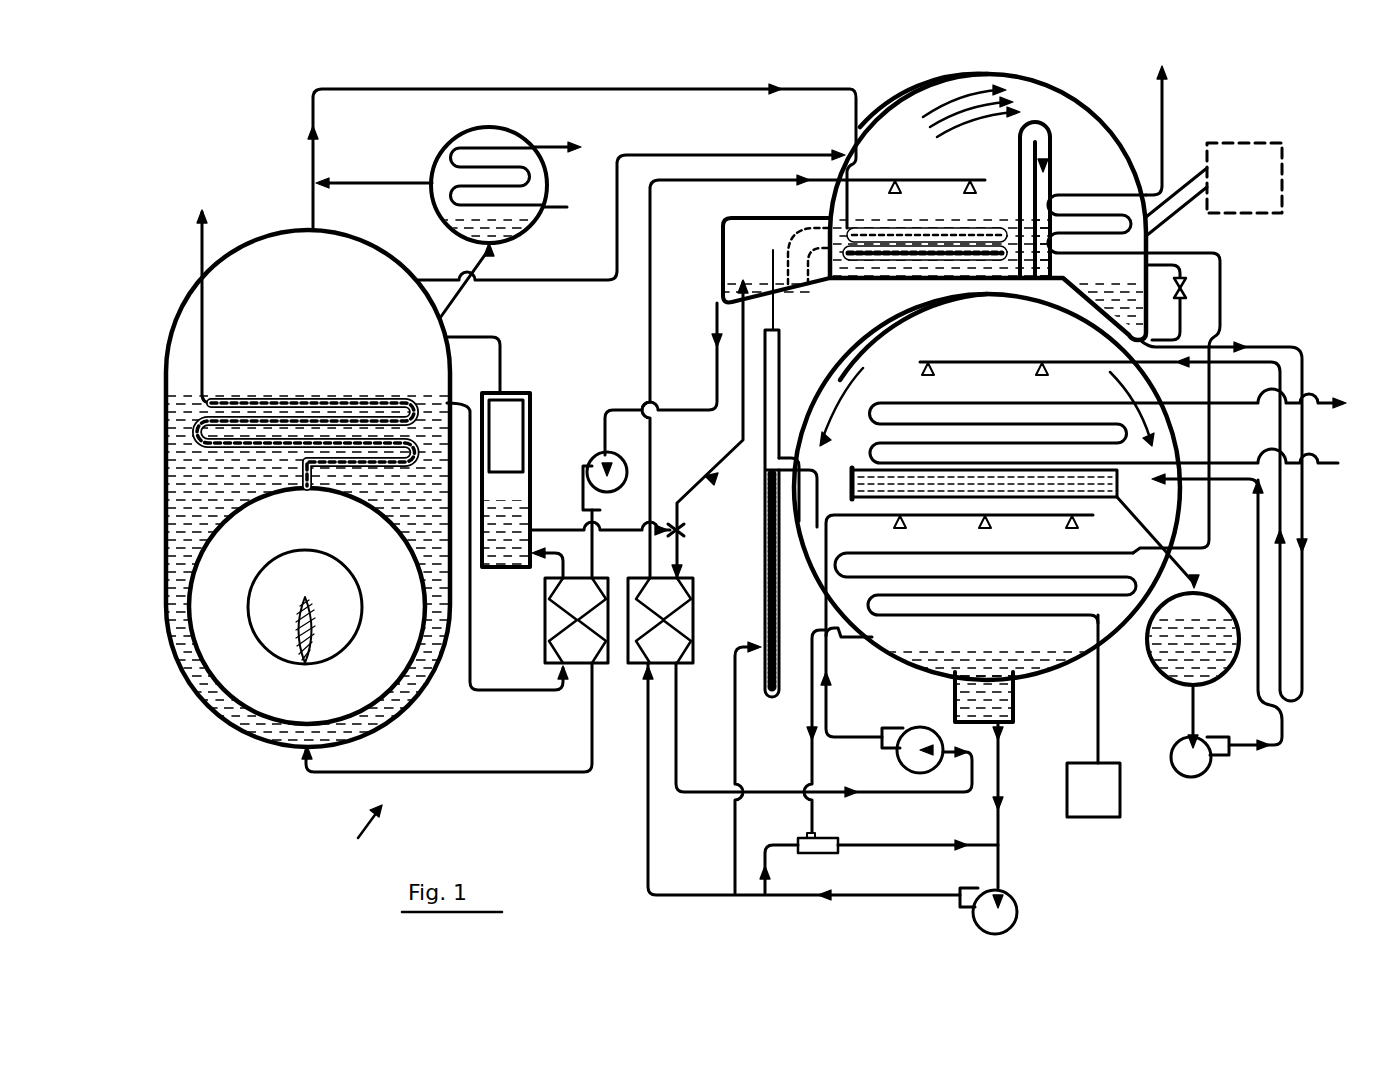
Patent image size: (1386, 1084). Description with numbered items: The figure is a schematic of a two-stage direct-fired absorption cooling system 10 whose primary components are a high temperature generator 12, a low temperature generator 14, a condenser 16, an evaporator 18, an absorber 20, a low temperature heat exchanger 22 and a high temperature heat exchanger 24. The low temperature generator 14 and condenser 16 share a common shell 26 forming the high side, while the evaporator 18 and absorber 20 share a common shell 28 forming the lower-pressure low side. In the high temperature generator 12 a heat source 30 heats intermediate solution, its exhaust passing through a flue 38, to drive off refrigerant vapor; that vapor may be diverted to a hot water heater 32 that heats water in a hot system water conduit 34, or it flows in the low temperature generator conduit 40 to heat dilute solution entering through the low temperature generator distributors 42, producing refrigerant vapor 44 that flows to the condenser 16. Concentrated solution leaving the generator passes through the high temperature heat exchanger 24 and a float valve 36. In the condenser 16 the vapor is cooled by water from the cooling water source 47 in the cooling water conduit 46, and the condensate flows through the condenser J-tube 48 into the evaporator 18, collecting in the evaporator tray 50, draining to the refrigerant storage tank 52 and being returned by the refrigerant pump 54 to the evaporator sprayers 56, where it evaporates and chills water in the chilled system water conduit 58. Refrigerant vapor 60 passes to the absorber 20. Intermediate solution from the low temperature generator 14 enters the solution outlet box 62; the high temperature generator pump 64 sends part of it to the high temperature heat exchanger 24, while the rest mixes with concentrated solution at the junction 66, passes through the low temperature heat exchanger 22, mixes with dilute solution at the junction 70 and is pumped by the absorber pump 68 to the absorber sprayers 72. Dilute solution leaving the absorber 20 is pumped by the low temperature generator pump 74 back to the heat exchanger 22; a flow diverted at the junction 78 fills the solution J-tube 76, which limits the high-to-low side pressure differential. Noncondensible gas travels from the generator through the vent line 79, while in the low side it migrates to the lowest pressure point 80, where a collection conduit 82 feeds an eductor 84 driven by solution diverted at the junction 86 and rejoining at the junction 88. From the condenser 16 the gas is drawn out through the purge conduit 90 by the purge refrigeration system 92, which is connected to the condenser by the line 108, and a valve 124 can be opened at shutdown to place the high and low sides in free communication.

The absorption cooling system 10 is at (358, 836).
The high temperature generator 12 is at (323, 322).
The low temperature generator 14 is at (931, 172).
The condenser 16 is at (1105, 175).
The evaporator 18 is at (1001, 335).
The absorber 20 is at (998, 640).
The low temperature heat exchanger 22 is at (693, 607).
The high temperature heat exchanger 24 is at (545, 593).
The low temperature generator/condenser shell 26 is at (906, 94).
The evaporator/absorber shell 28 is at (907, 312).
The heat source 30 is at (330, 610).
The hot water heater 32 is at (480, 128).
The hot system water conduit 34 is at (548, 135).
The float valve 36 is at (518, 498).
The flue 38 is at (318, 392).
The low temperature generator conduit 40 is at (972, 228).
The low temperature generator distributors 42 is at (968, 195).
The refrigerant vapor 44 is at (960, 98).
The cooling water conduit 46 is at (1223, 276).
The cooling water source 47 is at (1106, 802).
The condenser J-tube 48 is at (1270, 490).
The evaporator tray 50 is at (850, 487).
The refrigerant storage tank 52 is at (1201, 610).
The refrigerant pump 54 is at (1193, 778).
The evaporator sprayers 56 is at (1036, 373).
The chilled system water conduit 58 is at (1044, 403).
The refrigerant vapor 60 is at (864, 366).
The solution outlet box 62 is at (761, 254).
The high temperature generator pump 64 is at (596, 462).
The junction 66 is at (683, 527).
The absorber pump 68 is at (895, 728).
The junction 70 is at (1002, 758).
The absorber sprayers 72 is at (1072, 530).
The low temperature generator pump 74 is at (1015, 905).
The solution J-tube 76 is at (784, 347).
The junction 78 is at (740, 902).
The vent line 79 is at (582, 283).
The lowest pressure point 80 is at (857, 645).
The collection conduit 82 is at (812, 708).
The eductor 84 is at (818, 836).
The junction 86 is at (772, 897).
The junction 88 is at (1002, 845).
The purge conduit 90 is at (1175, 172).
The purge refrigeration system 92 is at (1257, 190).
The conduit 108 is at (1176, 210).
The valve 124 is at (1188, 290).